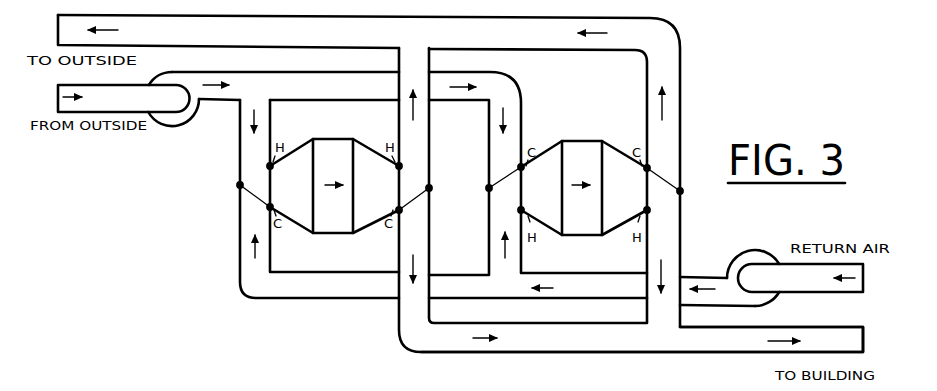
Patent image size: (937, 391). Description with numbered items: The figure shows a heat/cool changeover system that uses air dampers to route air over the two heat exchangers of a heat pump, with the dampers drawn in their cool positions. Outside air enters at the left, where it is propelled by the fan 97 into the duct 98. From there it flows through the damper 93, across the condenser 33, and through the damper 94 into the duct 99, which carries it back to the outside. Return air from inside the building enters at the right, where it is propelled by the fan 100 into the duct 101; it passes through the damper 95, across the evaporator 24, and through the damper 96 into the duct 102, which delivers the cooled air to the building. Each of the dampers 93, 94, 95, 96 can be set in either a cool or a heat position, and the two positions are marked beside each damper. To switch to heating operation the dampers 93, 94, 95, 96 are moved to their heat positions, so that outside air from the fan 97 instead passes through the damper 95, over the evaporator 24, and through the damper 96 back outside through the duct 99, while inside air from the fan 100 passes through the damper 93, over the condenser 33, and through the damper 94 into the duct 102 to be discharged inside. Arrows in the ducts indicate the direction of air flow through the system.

The evaporator 24 is at (583, 134).
The condenser 33 is at (335, 137).
The damper 93 is at (238, 185).
The damper 94 is at (450, 186).
The damper 95 is at (482, 193).
The damper 96 is at (682, 198).
The fan 97 is at (183, 124).
The duct 98 is at (224, 97).
The duct 99 is at (366, 12).
The fan 100 is at (754, 248).
The duct 101 is at (697, 272).
The duct 102 is at (726, 352).